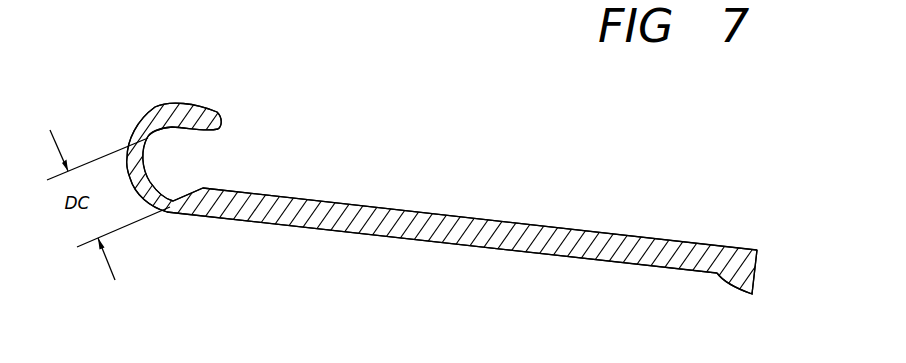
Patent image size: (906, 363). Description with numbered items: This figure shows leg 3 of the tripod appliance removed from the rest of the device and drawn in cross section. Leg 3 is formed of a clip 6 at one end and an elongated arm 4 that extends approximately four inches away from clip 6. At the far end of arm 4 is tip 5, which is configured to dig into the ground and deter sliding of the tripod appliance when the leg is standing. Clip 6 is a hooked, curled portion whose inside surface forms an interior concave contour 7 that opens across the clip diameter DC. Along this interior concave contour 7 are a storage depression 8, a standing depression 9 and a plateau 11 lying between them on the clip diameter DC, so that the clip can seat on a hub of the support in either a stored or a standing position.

The leg 3 is at (646, 94).
The arm 4 is at (623, 245).
The tip 5 is at (752, 294).
The clip 6 is at (187, 112).
The interior concave contour 7 is at (150, 172).
The plateau 11 is at (150, 172).
The storage depression 8 is at (147, 138).
The standing depression 9 is at (173, 200).